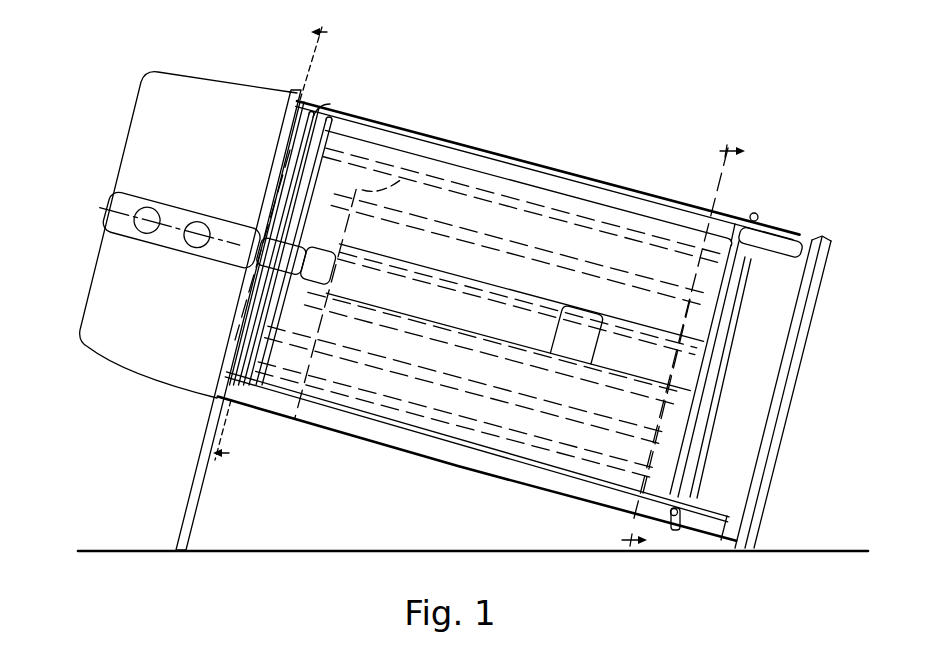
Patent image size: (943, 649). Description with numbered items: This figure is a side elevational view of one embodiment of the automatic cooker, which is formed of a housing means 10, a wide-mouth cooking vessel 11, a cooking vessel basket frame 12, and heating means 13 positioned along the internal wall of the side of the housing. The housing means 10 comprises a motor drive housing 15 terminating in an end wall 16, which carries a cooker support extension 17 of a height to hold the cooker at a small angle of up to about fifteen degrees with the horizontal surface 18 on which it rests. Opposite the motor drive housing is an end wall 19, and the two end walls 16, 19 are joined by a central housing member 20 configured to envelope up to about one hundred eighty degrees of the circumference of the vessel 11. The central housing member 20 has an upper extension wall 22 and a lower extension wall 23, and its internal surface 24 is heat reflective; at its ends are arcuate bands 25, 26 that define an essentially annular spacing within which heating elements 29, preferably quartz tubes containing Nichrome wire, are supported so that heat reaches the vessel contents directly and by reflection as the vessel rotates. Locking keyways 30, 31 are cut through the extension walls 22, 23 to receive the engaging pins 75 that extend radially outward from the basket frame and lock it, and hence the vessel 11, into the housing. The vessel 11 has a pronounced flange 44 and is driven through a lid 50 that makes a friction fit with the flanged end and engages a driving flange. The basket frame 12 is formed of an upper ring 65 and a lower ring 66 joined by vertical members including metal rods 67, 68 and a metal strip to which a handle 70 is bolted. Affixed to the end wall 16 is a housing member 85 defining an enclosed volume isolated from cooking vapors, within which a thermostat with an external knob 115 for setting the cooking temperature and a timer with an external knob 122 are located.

The housing means 10 is at (540, 158).
The wide-mouth cooking vessel 11 is at (601, 188).
The cooking vessel basket frame 12 is at (339, 101).
The heating means 13 is at (422, 182).
The motor drive housing 15 is at (227, 78).
The end wall 16 is at (299, 104).
The cooker support extension 17 is at (207, 428).
The horizontal surface 18 is at (796, 549).
The end wall 19 is at (797, 333).
The central housing member 20 is at (663, 200).
The upper extension wall 22 is at (568, 172).
The lower extension wall 23 is at (360, 428).
The internal surface 24 is at (601, 255).
The arcuate band 25 is at (736, 222).
The arcuate band 26 is at (364, 186).
The heating elements 29 is at (440, 223).
The locking keyway 30 is at (783, 253).
The locking keyway 31 is at (672, 515).
The flange 44 is at (320, 115).
The lid 50 is at (313, 115).
The upper ring 65 is at (340, 120).
The lower ring 66 is at (700, 433).
The metal rod 67 is at (690, 298).
The metal rod 68 is at (511, 438).
The handle 70 is at (318, 283).
The engaging pins 75 is at (758, 216).
The housing member 85 is at (172, 78).
The external knob 115 is at (148, 213).
The external knob 122 is at (194, 242).